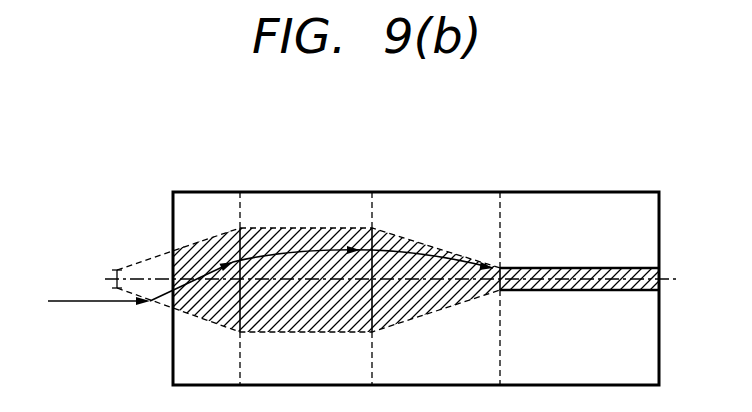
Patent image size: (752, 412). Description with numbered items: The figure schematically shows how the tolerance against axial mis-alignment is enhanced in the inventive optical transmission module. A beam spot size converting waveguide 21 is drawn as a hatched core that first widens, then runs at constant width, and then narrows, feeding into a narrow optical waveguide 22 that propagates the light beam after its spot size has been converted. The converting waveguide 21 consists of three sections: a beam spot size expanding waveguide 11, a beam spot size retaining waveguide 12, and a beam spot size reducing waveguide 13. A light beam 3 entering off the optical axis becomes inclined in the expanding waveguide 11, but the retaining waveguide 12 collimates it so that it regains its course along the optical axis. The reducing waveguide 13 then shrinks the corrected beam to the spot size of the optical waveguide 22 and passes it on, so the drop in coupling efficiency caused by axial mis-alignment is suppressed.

The light beam 3 is at (88, 301).
The beam spot size expanding waveguide 11 is at (173, 186).
The beam spot size retaining waveguide 12 is at (241, 186).
The beam spot size reducing waveguide 13 is at (500, 186).
The beam spot size converting waveguide 21 is at (173, 123).
The optical waveguide 22 is at (658, 123).